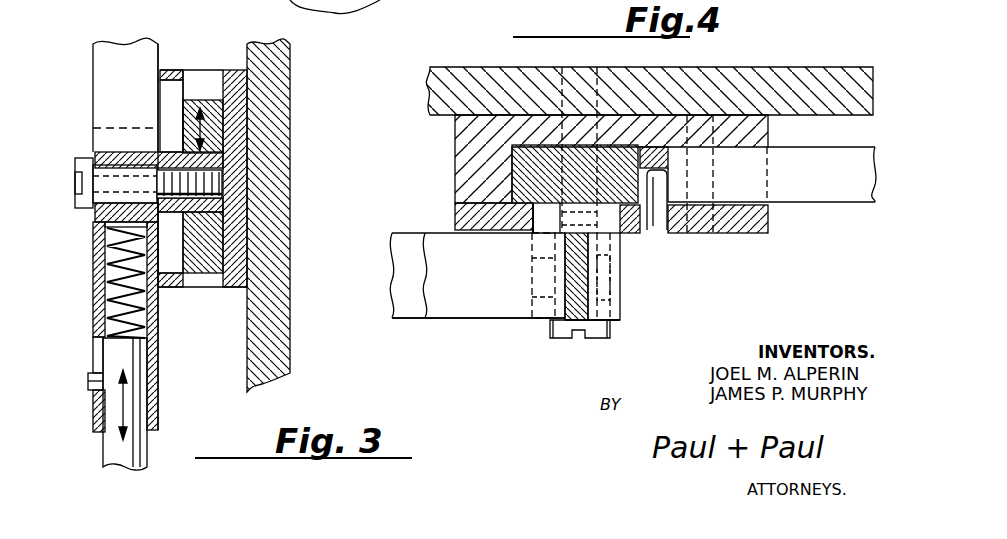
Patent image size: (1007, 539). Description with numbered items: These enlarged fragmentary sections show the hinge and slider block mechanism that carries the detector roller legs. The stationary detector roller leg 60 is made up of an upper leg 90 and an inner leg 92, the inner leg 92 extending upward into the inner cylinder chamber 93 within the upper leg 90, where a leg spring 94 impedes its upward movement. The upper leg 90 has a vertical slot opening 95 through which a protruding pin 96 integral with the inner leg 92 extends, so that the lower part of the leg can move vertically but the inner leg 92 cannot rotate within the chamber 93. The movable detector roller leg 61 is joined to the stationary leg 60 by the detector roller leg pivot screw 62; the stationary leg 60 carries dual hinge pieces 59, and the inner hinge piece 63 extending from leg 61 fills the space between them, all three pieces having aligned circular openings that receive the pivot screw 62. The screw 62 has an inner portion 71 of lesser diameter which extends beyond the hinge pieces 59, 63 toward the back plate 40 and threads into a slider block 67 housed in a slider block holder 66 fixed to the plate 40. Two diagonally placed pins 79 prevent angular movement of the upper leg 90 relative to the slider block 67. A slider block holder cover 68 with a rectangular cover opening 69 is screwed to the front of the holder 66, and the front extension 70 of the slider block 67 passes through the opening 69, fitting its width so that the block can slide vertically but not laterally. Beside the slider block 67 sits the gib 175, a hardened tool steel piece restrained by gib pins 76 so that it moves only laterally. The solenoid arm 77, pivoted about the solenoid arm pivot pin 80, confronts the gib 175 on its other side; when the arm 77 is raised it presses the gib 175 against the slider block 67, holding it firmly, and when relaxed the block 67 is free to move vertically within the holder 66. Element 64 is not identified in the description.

In FIG. 3, the back plate 40 is at (277, 148).
In FIG. 4, the back plate 40 is at (778, 72).
In FIG. 4, the dual hinge pieces 59 is at (553, 327).
In FIG. 3, the stationary detector roller leg 60 is at (93, 286).
In FIG. 4, the stationary detector roller leg 60 is at (618, 320).
In FIG. 4, the movable detector roller leg 61 is at (408, 243).
In FIG. 3, the detector roller leg pivot screw 62 is at (76, 175).
In FIG. 4, the detector roller leg pivot screw 62 is at (600, 340).
In FIG. 3, the inner hinge piece 63 is at (122, 153).
In FIG. 4, the inner hinge piece 63 is at (618, 278).
In FIG. 3, the plate 64 is at (105, 80).
In FIG. 4, the plate 64 is at (607, 282).
In FIG. 3, the slider block holder 66 is at (232, 82).
In FIG. 4, the slider block holder 66 is at (472, 147).
In FIG. 3, the slider block 67 is at (200, 100).
In FIG. 3, the slider block holder cover 68 is at (168, 70).
In FIG. 4, the slider block holder cover 68 is at (463, 215).
In FIG. 3, the rectangular cover opening 69 is at (170, 112).
In FIG. 4, the rectangular cover opening 69 is at (528, 237).
In FIG. 4, the front extension 70 is at (632, 233).
In FIG. 3, the inner portion 71 is at (200, 183).
In FIG. 4, the inner portion 71 is at (562, 72).
In FIG. 4, the gib pins 76 is at (660, 232).
In FIG. 4, the solenoid arm 77 is at (858, 203).
In FIG. 4, the diagonally placed pins 79 is at (540, 258).
In FIG. 4, the solenoid arm pivot pin 80 is at (713, 172).
In FIG. 3, the upper leg 90 is at (157, 400).
In FIG. 3, the inner leg 92 is at (140, 447).
In FIG. 3, the inner cylinder chamber 93 is at (142, 312).
In FIG. 3, the leg spring 94 is at (112, 305).
In FIG. 3, the vertical slot opening 95 is at (96, 340).
In FIG. 3, the protruding pin 96 is at (90, 386).
In FIG. 4, the gib 175 is at (657, 147).